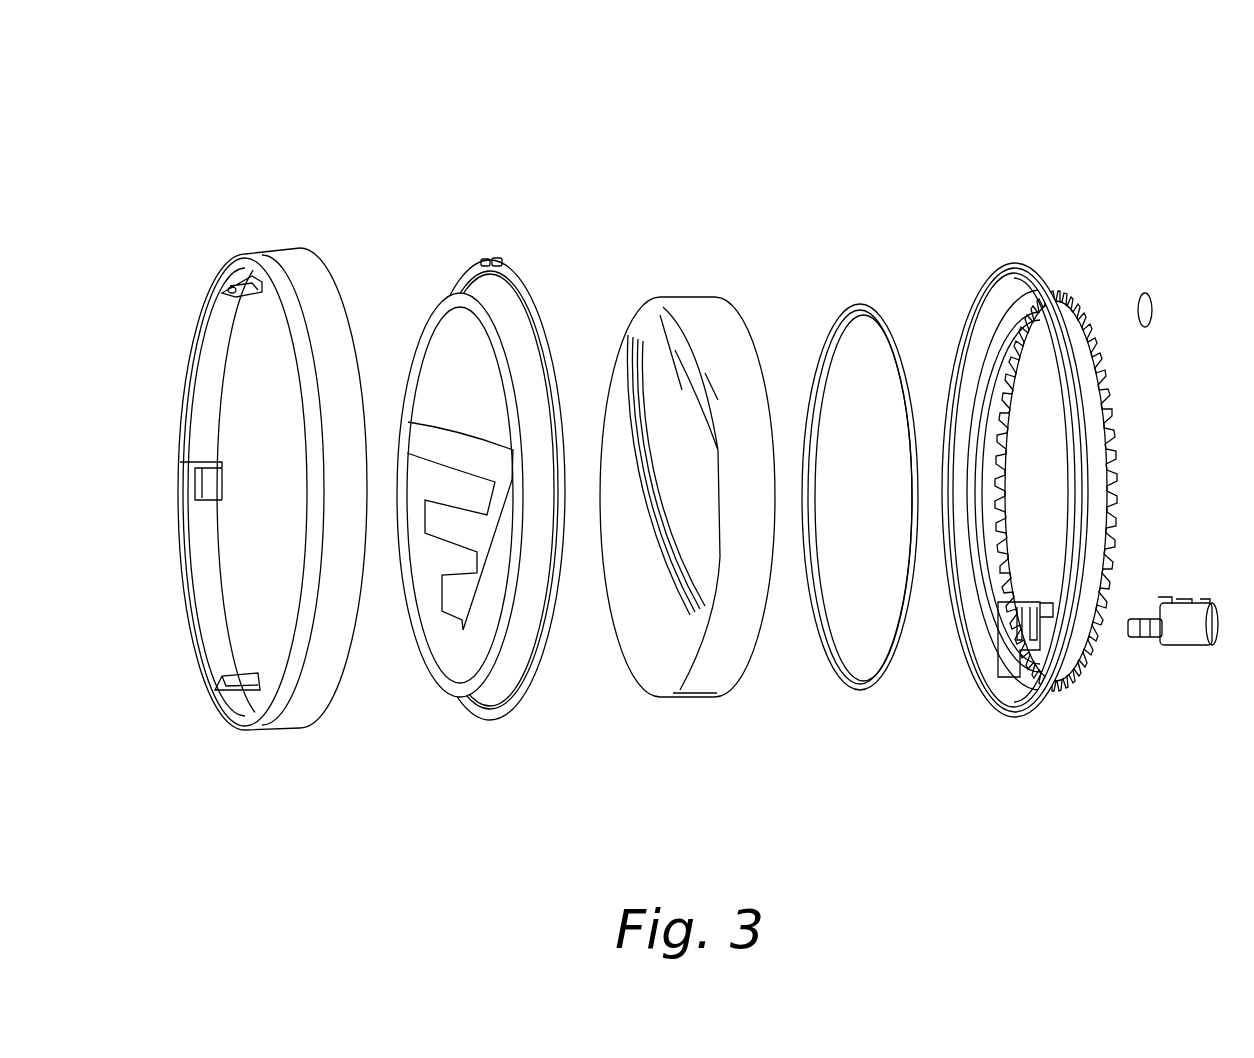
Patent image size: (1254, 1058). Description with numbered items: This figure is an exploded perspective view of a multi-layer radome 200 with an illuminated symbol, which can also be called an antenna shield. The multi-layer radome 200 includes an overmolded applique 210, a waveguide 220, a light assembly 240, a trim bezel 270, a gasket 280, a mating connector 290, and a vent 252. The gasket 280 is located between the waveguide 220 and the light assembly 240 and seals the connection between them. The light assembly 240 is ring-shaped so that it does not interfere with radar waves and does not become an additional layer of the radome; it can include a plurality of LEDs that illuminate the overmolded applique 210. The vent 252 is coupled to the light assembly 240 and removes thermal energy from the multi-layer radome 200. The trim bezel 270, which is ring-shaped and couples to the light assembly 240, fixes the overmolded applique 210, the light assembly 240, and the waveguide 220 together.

The multi-layer radome 200 is at (414, 140).
The overmolded applique 210 is at (570, 727).
The waveguide 220 is at (775, 727).
The light assembly 240 is at (963, 646).
The vent 252 is at (1152, 305).
The trim bezel 270 is at (241, 722).
The gasket 280 is at (813, 616).
The mating connector 290 is at (1192, 647).